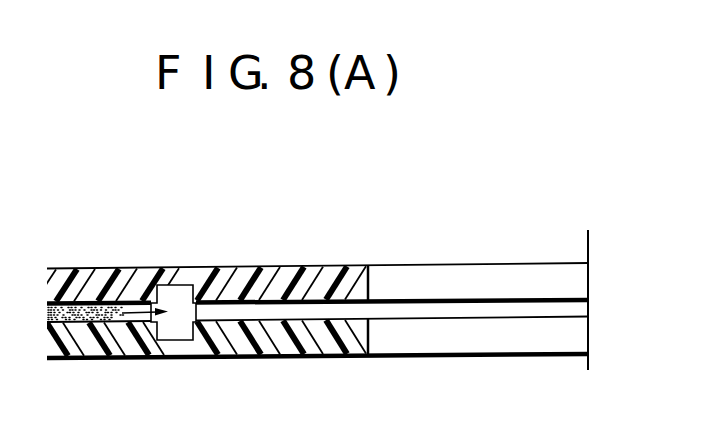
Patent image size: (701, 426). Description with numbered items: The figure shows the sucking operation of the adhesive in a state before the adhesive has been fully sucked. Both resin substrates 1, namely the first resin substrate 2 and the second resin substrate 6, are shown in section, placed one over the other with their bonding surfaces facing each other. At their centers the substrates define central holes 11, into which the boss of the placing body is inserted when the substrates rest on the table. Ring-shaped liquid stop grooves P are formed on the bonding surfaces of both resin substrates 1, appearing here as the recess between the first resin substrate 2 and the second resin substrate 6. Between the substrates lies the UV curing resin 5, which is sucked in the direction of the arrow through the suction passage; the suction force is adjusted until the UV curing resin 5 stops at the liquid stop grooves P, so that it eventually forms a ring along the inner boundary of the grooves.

The resin substrates 1 is at (196, 246).
The first resin substrate 2 is at (266, 345).
The UV curing resin 5 is at (78, 313).
The second resin substrate 6 is at (260, 276).
The central holes 11 is at (376, 268).
The liquid stop grooves P is at (177, 292).